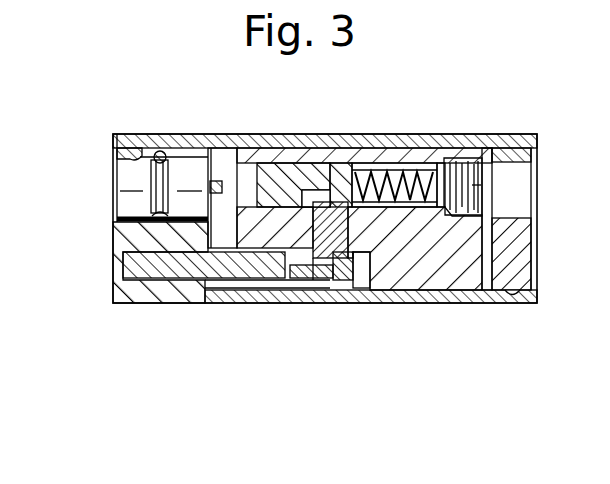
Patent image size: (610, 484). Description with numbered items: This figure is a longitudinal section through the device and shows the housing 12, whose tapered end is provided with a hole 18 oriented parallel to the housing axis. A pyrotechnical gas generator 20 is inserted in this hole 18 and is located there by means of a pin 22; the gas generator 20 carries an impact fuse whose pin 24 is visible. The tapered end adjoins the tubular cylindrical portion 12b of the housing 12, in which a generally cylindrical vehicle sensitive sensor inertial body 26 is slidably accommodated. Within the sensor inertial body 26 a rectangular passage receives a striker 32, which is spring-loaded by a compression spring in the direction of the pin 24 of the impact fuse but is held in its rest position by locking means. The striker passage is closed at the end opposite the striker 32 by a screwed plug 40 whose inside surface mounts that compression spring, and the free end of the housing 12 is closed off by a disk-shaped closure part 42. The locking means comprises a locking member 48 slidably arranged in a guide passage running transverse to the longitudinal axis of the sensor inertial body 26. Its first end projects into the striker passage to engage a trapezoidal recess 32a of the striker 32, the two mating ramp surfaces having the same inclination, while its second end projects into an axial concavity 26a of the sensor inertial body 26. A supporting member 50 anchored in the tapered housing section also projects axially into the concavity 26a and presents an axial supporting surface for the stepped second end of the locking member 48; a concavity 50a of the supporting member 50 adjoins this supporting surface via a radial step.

The housing 12 is at (525, 126).
The tubular cylindrical portion 12b is at (401, 136).
The hole 18 is at (131, 152).
The pyrotechnical gas generator 20 is at (122, 198).
The pin 22 is at (161, 150).
The pin of the impact fuse 24 is at (219, 192).
The sensor inertial body 26 is at (429, 262).
The axial concavity 26a is at (372, 272).
The striker 32 is at (284, 176).
The trapezoidal recess 32a is at (326, 180).
The screwed plug 40 is at (461, 166).
The disk-shaped closure part 42 is at (532, 239).
The locking member 48 is at (328, 258).
The supporting member 50 is at (198, 270).
The concavity of the supporting member 50a is at (299, 261).